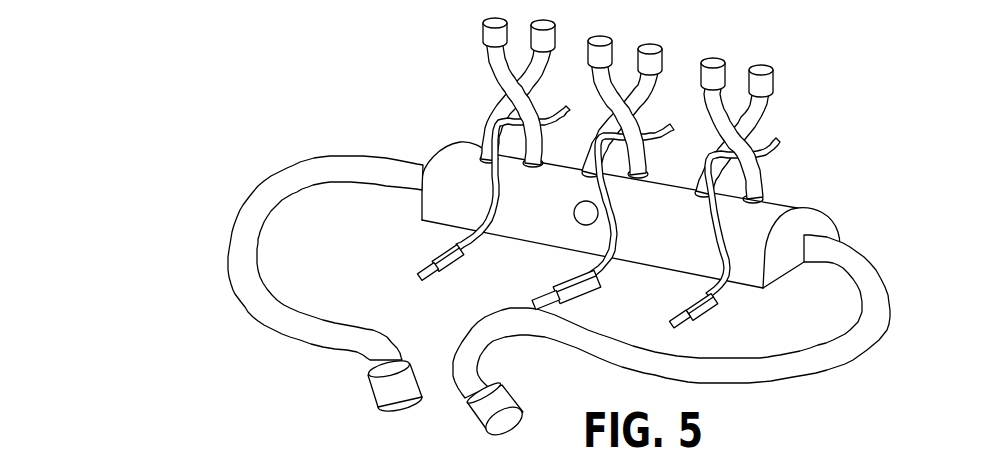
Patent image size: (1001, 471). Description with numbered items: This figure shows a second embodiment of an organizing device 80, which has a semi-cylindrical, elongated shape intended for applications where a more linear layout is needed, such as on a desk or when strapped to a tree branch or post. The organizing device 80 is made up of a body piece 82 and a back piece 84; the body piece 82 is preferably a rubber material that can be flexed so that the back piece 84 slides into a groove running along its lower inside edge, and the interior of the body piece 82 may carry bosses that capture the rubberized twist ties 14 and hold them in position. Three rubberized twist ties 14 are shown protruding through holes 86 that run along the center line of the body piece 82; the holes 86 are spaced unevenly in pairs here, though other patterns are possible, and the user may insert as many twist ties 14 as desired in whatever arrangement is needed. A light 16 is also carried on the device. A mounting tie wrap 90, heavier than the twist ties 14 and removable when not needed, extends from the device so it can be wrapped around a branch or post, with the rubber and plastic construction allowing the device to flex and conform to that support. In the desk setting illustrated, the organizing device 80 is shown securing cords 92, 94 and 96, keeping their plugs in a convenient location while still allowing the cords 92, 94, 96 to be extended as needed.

The rubberized twist ties 14 is at (624, 124).
The light 16 is at (577, 222).
The organizing device 80 is at (613, 207).
The body piece 82 is at (818, 221).
The back piece 84 is at (789, 286).
The holes 86 is at (447, 159).
The mounting tie wrap 90 is at (288, 339).
The cord 92 is at (724, 290).
The cord 94 is at (596, 271).
The cord 96 is at (452, 245).